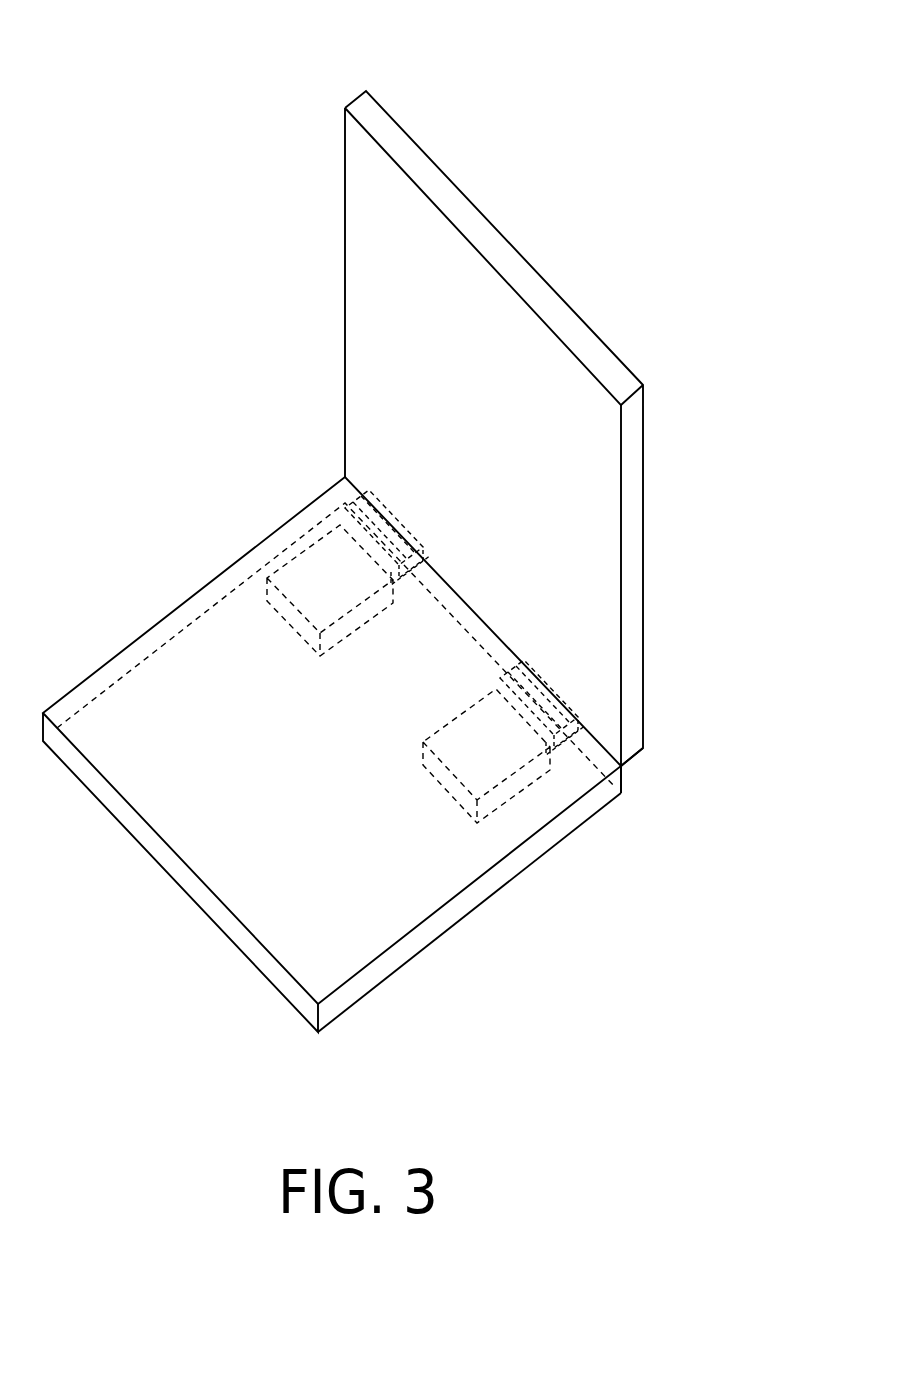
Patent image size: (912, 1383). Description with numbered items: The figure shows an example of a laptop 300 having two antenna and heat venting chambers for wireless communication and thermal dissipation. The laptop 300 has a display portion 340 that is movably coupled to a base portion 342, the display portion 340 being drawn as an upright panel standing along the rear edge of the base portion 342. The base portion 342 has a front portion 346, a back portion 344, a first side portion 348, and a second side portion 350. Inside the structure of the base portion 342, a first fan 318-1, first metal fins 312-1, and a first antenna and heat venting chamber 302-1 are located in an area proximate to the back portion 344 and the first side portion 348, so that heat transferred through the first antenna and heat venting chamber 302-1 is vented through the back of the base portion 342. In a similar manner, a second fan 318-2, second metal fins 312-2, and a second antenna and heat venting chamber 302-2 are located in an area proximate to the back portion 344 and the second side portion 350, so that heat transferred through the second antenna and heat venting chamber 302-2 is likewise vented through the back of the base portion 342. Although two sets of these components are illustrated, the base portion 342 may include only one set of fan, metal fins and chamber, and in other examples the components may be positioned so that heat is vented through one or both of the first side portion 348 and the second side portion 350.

The laptop 300 is at (60, 43).
The first antenna and heat venting chamber 302-1 is at (358, 508).
The second antenna and heat venting chamber 302-2 is at (565, 718).
The first metal fins 312-1 is at (348, 527).
The second metal fins 312-2 is at (552, 753).
The first fan 318-1 is at (318, 558).
The second fan 318-2 is at (488, 763).
The display portion 340 is at (605, 495).
The base portion 342 is at (382, 905).
The back portion 344 is at (623, 777).
The front portion 346 is at (202, 888).
The first side portion 348 is at (175, 603).
The second side portion 350 is at (378, 967).